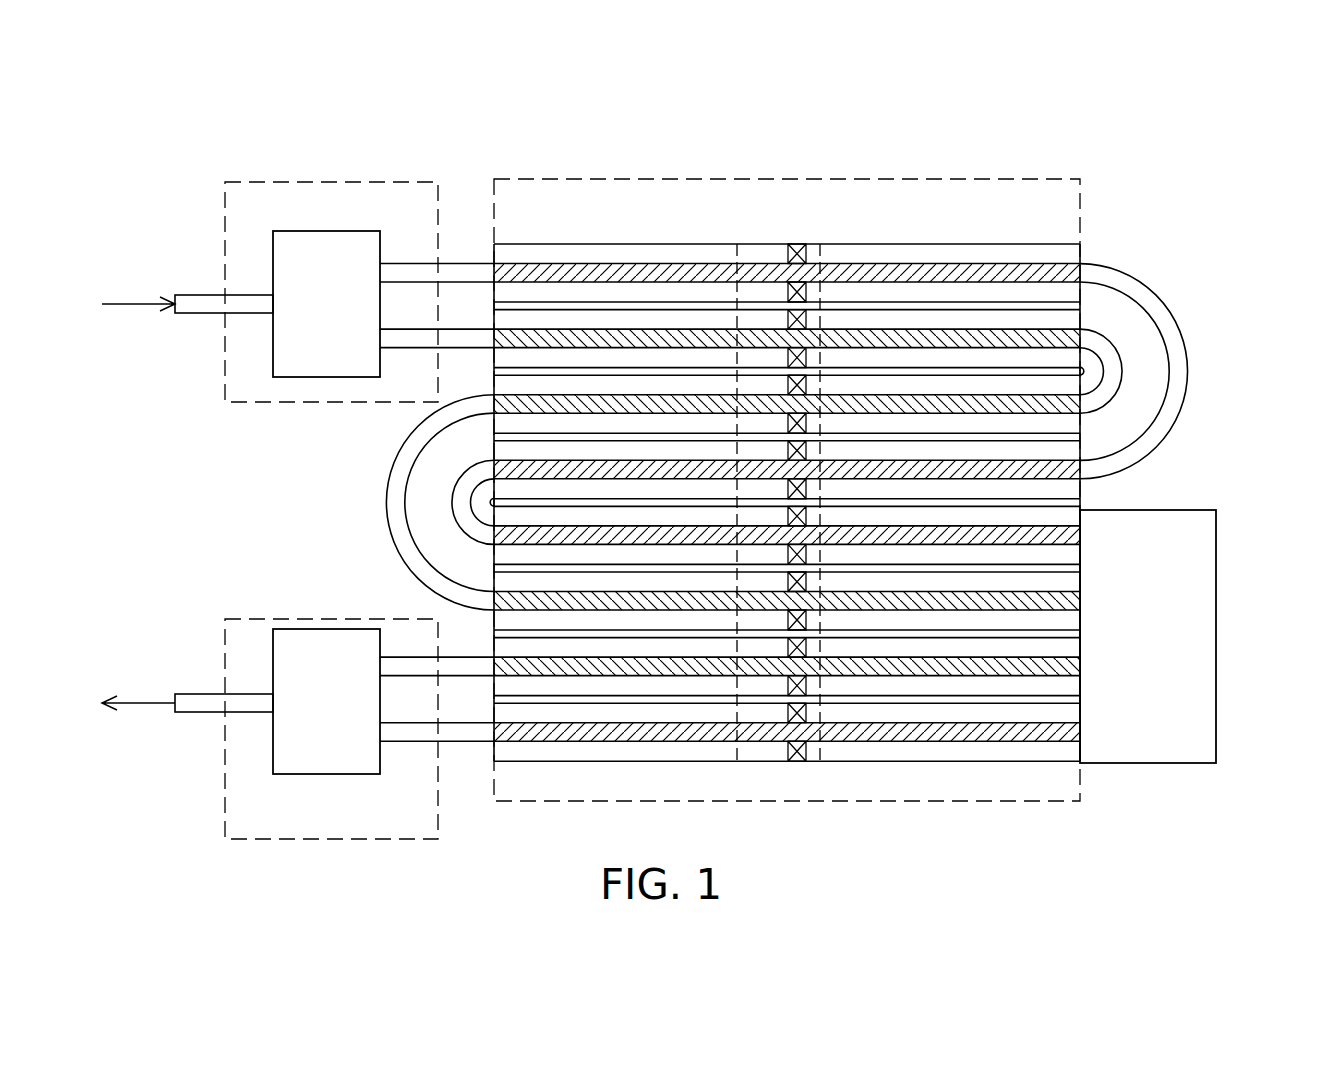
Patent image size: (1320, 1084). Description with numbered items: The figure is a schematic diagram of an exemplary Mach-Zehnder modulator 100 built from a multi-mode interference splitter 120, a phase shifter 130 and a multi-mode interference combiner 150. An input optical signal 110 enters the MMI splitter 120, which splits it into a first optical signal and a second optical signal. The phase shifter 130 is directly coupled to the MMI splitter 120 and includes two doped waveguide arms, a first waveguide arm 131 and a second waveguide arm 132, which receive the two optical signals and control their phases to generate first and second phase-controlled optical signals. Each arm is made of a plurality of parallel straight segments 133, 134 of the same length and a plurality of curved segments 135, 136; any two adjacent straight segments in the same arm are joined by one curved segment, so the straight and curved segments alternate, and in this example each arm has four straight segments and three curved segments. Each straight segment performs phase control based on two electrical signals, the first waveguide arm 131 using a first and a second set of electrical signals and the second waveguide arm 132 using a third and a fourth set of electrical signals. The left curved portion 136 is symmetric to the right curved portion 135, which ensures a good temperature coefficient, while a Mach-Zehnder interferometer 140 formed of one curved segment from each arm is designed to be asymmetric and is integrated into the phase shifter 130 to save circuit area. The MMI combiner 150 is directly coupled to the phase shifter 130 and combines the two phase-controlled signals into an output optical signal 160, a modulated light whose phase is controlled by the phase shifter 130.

The Mach-Zehnder modulator 100 is at (150, 123).
The input optical signal 110 is at (140, 250).
The multi-mode interference splitter 120 is at (330, 180).
The phase shifter 130 is at (1022, 178).
The first waveguide arm 131 is at (469, 262).
The second waveguide arm 132 is at (465, 328).
The straight segment 133 is at (1053, 263).
The straight segment 134 is at (1055, 330).
The curved segment 135 is at (1188, 388).
The curved segment 136 is at (452, 503).
The Mach-Zehnder interferometer 140 is at (1216, 546).
The multi-mode interference combiner 150 is at (316, 618).
The output optical signal 160 is at (140, 645).